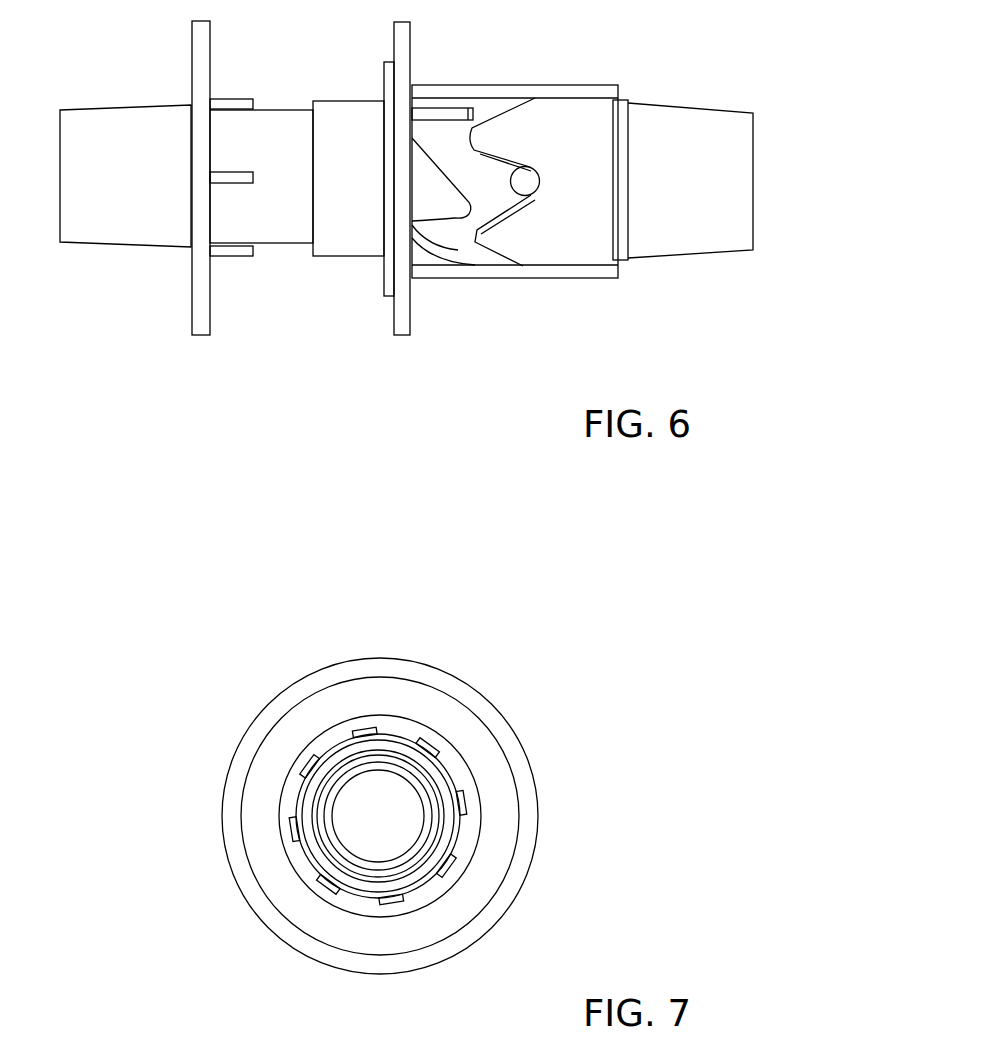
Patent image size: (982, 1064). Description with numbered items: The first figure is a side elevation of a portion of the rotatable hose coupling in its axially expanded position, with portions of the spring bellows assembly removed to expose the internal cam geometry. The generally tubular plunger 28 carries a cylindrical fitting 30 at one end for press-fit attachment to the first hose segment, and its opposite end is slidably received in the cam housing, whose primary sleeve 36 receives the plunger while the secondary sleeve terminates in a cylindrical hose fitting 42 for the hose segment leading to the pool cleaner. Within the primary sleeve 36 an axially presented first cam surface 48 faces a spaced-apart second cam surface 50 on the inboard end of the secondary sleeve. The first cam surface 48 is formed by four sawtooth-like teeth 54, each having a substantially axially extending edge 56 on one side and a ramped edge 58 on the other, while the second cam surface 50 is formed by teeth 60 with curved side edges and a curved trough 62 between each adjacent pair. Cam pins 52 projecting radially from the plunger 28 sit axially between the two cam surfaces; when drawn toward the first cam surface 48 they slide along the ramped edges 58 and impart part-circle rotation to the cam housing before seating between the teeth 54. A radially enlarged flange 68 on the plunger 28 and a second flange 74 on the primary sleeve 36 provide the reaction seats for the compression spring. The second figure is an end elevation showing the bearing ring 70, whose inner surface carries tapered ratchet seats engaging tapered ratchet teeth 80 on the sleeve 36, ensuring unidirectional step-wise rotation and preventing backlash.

In FIG. 6, the plunger 28 is at (276, 127).
In FIG. 6, the cylindrical fitting 30 is at (77, 228).
In FIG. 6, the cylindrical hose fitting 42 is at (742, 188).
In FIG. 6, the first cam surface 48 is at (453, 223).
In FIG. 6, the second cam surface 50 is at (517, 137).
In FIG. 6, the cam pins 52 is at (534, 194).
In FIG. 6, the teeth 54 is at (430, 108).
In FIG. 6, the axially extending edge 56 is at (432, 227).
In FIG. 6, the ramped edge 58 is at (437, 157).
In FIG. 6, the teeth 60 is at (527, 120).
In FIG. 6, the trough 62 is at (535, 173).
In FIG. 6, the flange 68 is at (204, 318).
In FIG. 6, the flange 74 is at (400, 318).
In FIG. 7, the primary sleeve 36 is at (313, 802).
In FIG. 7, the bearing ring 70 is at (263, 860).
In FIG. 7, the ratchet teeth 80 is at (463, 800).